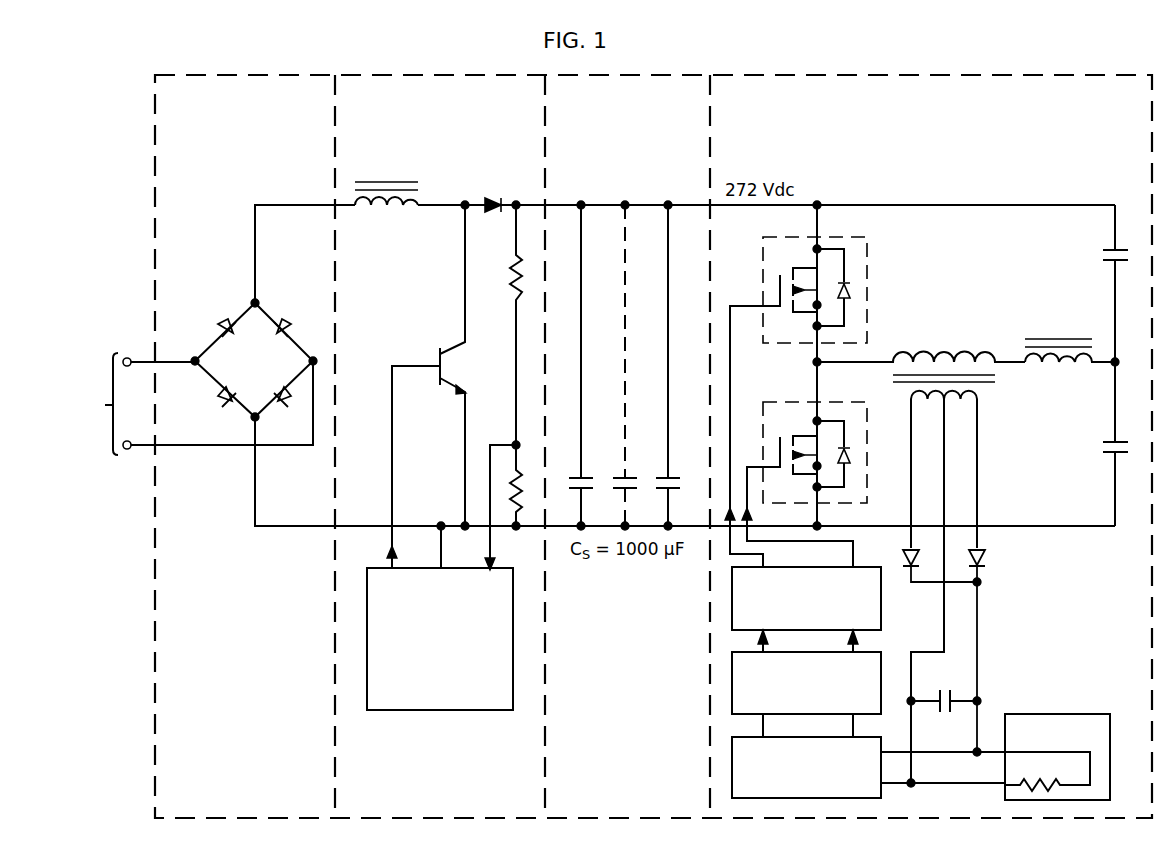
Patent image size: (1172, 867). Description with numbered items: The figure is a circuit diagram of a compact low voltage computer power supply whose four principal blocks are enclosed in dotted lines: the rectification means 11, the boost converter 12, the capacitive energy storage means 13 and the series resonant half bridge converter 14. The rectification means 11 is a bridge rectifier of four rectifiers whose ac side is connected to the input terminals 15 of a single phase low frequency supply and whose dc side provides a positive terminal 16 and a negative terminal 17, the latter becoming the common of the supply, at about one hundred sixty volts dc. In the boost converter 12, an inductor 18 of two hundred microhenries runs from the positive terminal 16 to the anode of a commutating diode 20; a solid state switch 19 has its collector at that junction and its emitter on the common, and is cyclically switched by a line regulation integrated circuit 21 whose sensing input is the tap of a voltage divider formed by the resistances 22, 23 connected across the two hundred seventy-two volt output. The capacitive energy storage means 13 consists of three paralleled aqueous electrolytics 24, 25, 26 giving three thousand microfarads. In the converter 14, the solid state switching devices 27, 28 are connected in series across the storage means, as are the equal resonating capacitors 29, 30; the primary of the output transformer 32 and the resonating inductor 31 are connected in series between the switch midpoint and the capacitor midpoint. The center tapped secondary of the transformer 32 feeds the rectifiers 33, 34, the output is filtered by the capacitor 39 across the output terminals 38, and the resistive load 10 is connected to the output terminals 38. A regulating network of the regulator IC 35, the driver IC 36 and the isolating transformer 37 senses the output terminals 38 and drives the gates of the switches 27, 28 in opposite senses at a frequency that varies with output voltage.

The load 10 is at (1104, 714).
The rectification means 11 is at (234, 157).
The boost converter 12 is at (429, 132).
The capacitive energy storage means 13 is at (617, 180).
The series resonant half bridge converter 14 is at (919, 157).
The input terminals 15 is at (130, 368).
The positive terminal 16 is at (254, 219).
The negative terminal 17 is at (254, 510).
The inductor 18 is at (362, 178).
The solid state switch 19 is at (436, 384).
The commutating diode 20 is at (494, 218).
The line regulation integrated circuit 21 is at (432, 717).
The resistance 22 is at (504, 300).
The resistance 23 is at (506, 458).
The aqueous electrolytic capacitor 24 is at (591, 474).
The aqueous electrolytic capacitor 25 is at (633, 474).
The aqueous electrolytic capacitor 26 is at (676, 474).
The solid state switching device 27 is at (869, 291).
The solid state switching device 28 is at (880, 481).
The resonating capacitor 29 is at (1110, 245).
The resonating capacitor 30 is at (1108, 453).
The resonating inductor 31 is at (1042, 366).
The output transformer 32 is at (944, 356).
The rectifier 33 is at (904, 572).
The rectifier 34 is at (982, 570).
The regulator IC 35 is at (726, 780).
The driver IC 36 is at (726, 691).
The isolating transformer 37 is at (726, 606).
The output terminals 38 is at (975, 760).
The capacitor 39 is at (948, 684).